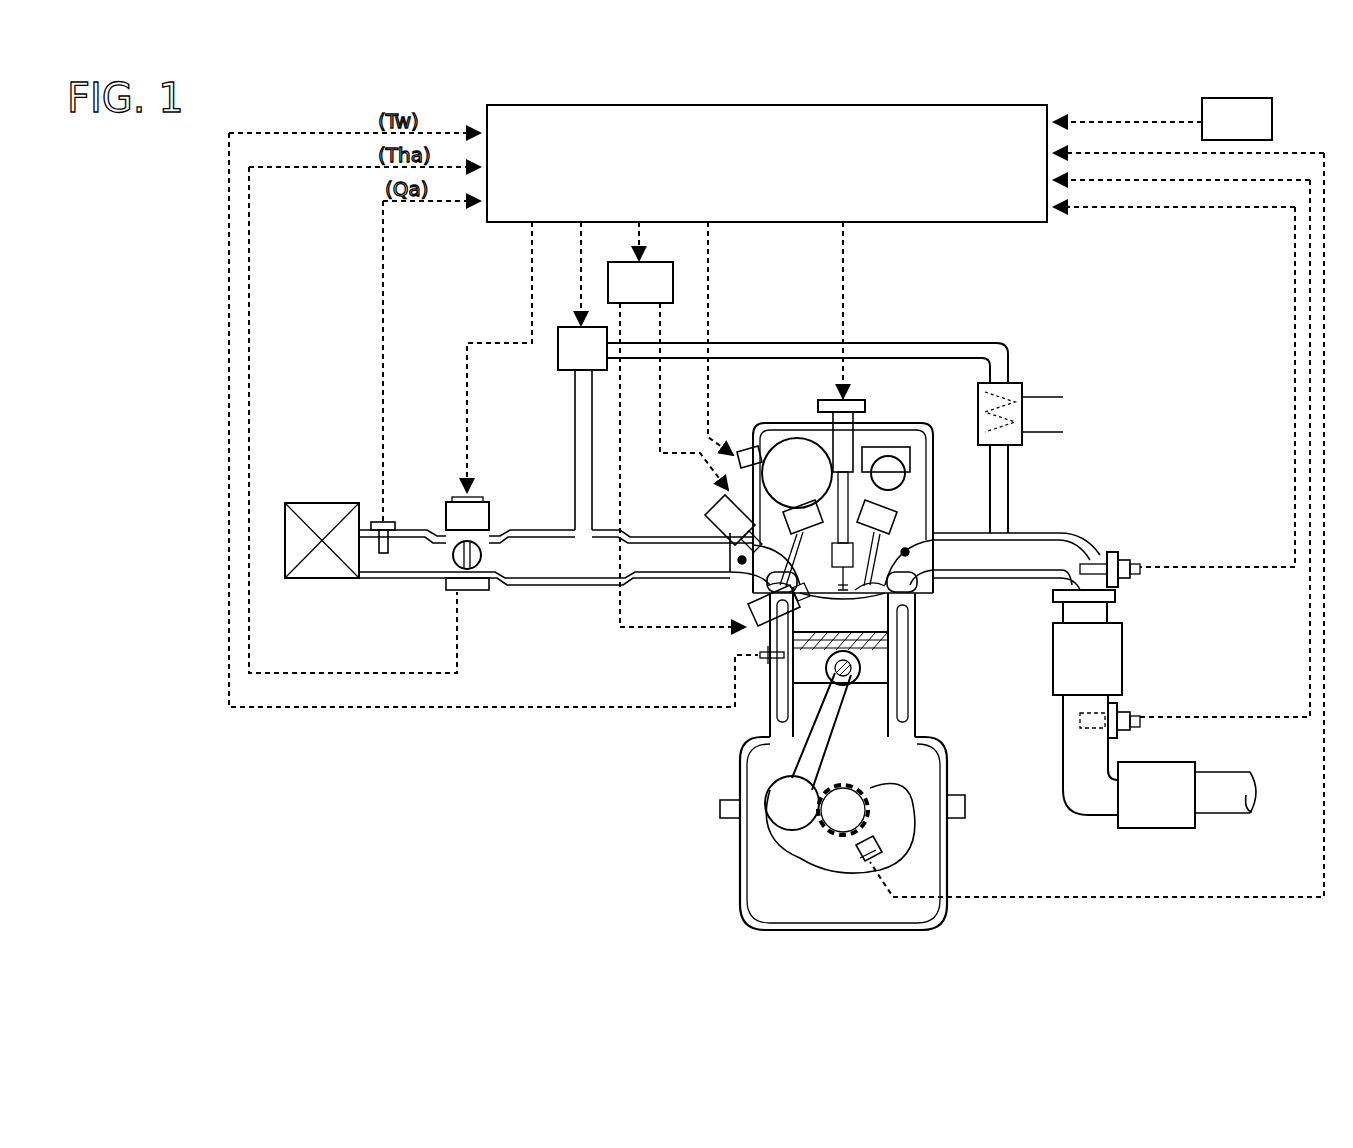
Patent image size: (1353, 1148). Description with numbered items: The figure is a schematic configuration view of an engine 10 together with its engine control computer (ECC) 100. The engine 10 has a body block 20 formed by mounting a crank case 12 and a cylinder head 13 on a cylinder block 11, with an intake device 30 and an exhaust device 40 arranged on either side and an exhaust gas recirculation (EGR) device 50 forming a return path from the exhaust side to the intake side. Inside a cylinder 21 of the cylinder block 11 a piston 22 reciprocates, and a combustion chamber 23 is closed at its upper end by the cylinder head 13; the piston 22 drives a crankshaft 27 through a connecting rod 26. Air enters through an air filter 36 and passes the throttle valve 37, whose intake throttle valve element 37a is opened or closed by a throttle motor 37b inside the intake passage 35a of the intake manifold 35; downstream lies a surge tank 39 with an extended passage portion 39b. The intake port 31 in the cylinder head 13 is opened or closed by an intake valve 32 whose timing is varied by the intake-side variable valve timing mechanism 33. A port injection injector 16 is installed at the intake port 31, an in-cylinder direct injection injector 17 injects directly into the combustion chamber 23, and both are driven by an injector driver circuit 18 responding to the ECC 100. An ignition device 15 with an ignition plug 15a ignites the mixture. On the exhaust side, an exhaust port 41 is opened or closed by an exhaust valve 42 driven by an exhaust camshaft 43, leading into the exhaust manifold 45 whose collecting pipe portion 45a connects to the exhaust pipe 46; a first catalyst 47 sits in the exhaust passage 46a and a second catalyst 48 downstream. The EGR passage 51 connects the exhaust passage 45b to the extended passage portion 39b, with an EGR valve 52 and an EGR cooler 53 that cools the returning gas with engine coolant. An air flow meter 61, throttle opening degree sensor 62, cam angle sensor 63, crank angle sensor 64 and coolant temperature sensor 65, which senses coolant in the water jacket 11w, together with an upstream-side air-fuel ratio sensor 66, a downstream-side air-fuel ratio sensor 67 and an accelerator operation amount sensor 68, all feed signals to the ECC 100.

The engine 10 is at (1128, 318).
The cylinder block 11 is at (917, 718).
The water jacket 11w is at (905, 685).
The crank case 12 is at (950, 792).
The cylinder head 13 is at (938, 530).
The ignition device 15 is at (868, 400).
The ignition plug 15a is at (870, 605).
The port injection injector 16 is at (710, 505).
The in-cylinder direct injection injector 17 is at (755, 625).
The injector driver circuit 18 is at (654, 296).
The body block 20 is at (762, 722).
The cylinder 21 is at (870, 732).
The piston 22 is at (895, 642).
The combustion chamber 23 is at (845, 625).
The connecting rod 26 is at (752, 775).
The crankshaft 27 is at (843, 815).
The intake device 30 is at (593, 600).
The intake port 31 is at (700, 575).
The intake valve 32 is at (770, 578).
The intake-side variable valve timing mechanism 33 is at (800, 440).
The intake manifold 35 is at (385, 578).
The intake passage 35a is at (700, 545).
The air filter 36 is at (305, 578).
The throttle valve 37 is at (450, 504).
The intake throttle valve element 37a is at (482, 555).
The throttle motor 37b is at (486, 506).
The surge tank 39 is at (530, 585).
The extended passage portion 39b is at (575, 585).
The exhaust device 40 is at (1094, 667).
The exhaust port 41 is at (940, 560).
The exhaust valve 42 is at (925, 582).
The exhaust camshaft 43 is at (895, 450).
The exhaust manifold 45 is at (1020, 533).
The collecting pipe portion 45a is at (1095, 545).
The exhaust passage 45b is at (1003, 575).
The exhaust pipe 46 is at (1115, 612).
The exhaust passage 46a is at (1080, 795).
The first catalyst 47 is at (1065, 655).
The second catalyst 48 is at (1155, 828).
The exhaust gas recirculation (EGR) device 50 is at (952, 338).
The EGR passage 51 is at (748, 343).
The EGR valve 52 is at (596, 363).
The EGR cooler 53 is at (1030, 383).
The air flow meter 61 is at (375, 522).
The throttle opening degree sensor 62 is at (445, 588).
The cam angle sensor 63 is at (758, 450).
The crank angle sensor 64 is at (882, 852).
The coolant temperature sensor 65 is at (762, 660).
The upstream-side air-fuel ratio sensor 66 is at (1120, 552).
The downstream-side air-fuel ratio sensor 67 is at (1125, 705).
The accelerator operation amount sensor 68 is at (1251, 134).
The engine control computer (ECC) 100 is at (930, 105).